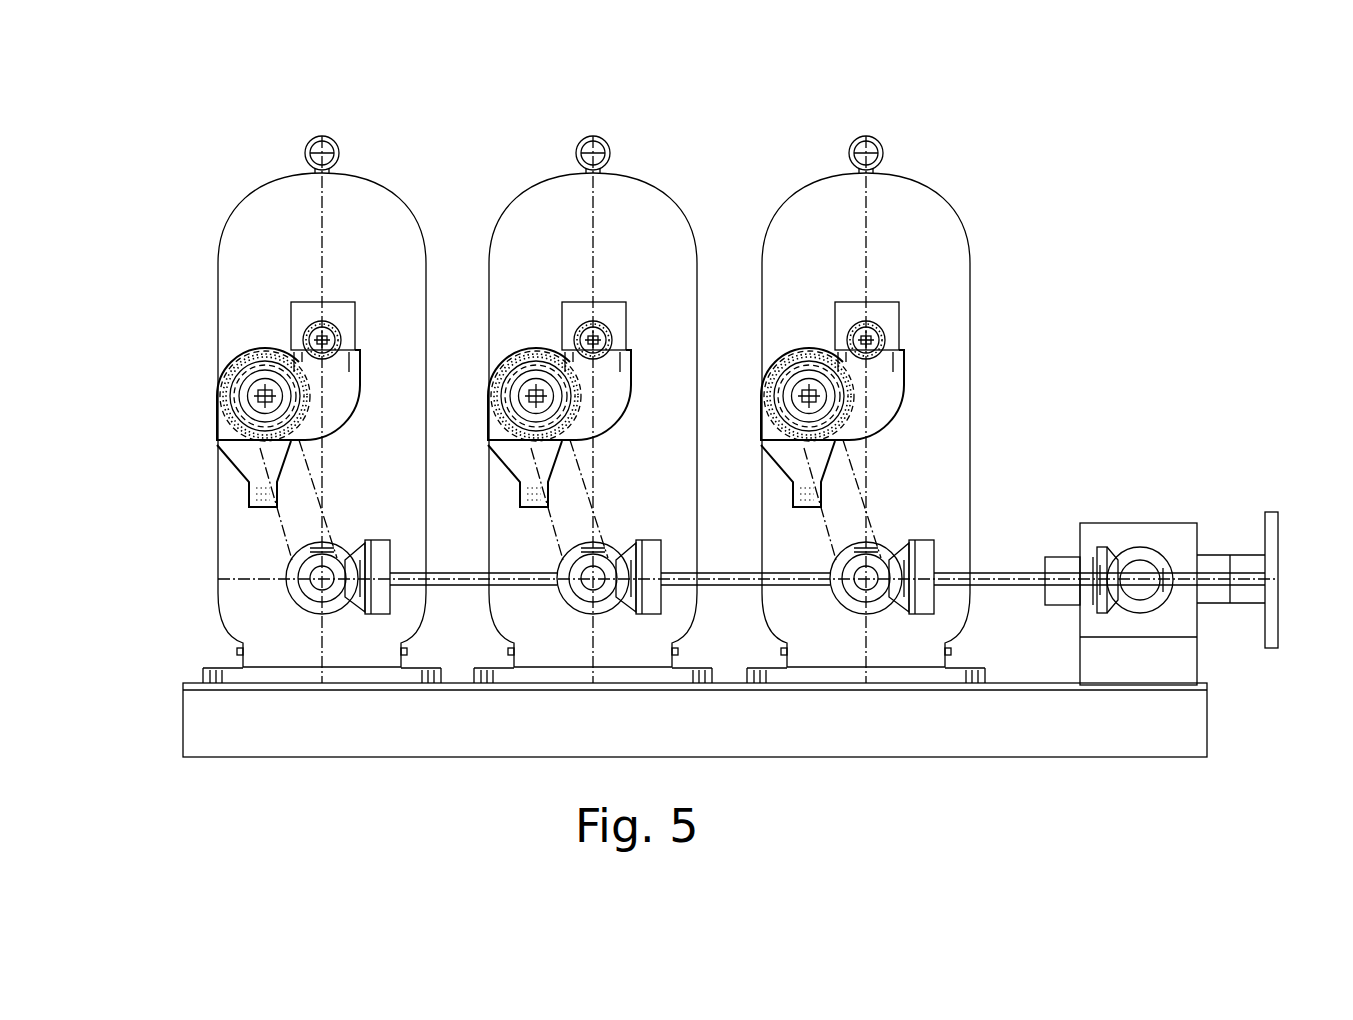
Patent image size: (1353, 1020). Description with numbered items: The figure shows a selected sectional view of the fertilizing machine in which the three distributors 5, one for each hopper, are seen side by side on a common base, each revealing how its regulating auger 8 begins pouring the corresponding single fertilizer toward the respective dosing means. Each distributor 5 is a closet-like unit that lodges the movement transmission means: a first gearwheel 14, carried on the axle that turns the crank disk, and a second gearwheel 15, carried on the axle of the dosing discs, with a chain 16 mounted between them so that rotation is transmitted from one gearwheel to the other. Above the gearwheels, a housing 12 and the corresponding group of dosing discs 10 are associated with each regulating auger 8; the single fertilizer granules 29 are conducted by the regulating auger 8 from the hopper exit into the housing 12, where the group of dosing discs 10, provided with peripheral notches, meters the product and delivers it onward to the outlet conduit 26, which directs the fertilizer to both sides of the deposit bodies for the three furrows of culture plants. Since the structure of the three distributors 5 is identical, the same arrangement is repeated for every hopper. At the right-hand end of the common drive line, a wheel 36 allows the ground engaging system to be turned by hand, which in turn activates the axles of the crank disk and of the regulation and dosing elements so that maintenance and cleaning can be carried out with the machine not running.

The distributor 5 is at (710, 393).
The regulating auger 8 is at (880, 323).
The dosing discs 10 is at (847, 403).
The housing 12 is at (884, 367).
The first gearwheel 14 is at (300, 587).
The second gearwheel 15 is at (247, 388).
The chain 16 is at (272, 521).
The conduit 26 is at (255, 497).
The single fertilizer granules 29 is at (857, 395).
The wheel 36 is at (1270, 550).